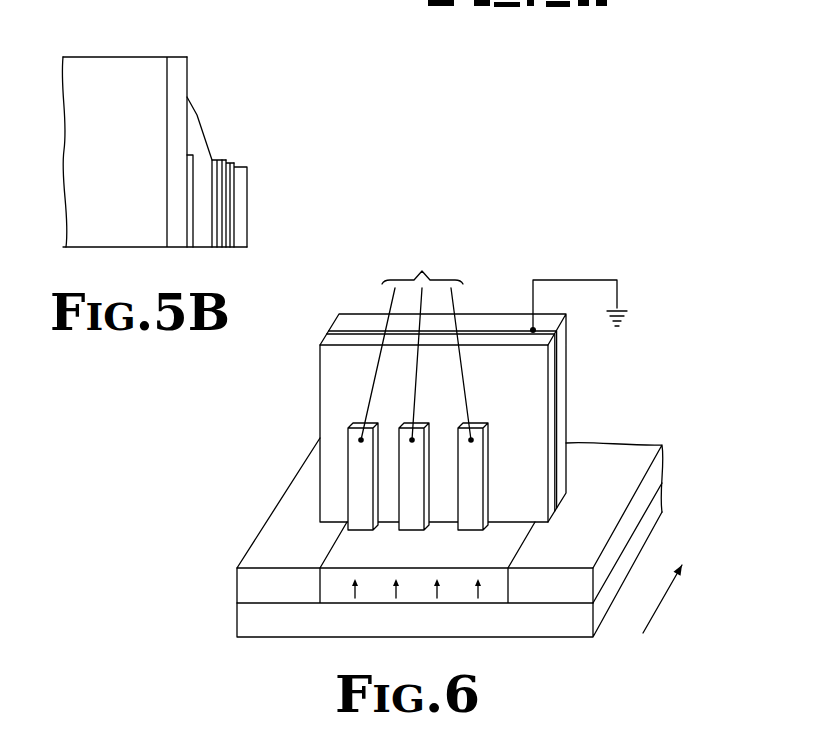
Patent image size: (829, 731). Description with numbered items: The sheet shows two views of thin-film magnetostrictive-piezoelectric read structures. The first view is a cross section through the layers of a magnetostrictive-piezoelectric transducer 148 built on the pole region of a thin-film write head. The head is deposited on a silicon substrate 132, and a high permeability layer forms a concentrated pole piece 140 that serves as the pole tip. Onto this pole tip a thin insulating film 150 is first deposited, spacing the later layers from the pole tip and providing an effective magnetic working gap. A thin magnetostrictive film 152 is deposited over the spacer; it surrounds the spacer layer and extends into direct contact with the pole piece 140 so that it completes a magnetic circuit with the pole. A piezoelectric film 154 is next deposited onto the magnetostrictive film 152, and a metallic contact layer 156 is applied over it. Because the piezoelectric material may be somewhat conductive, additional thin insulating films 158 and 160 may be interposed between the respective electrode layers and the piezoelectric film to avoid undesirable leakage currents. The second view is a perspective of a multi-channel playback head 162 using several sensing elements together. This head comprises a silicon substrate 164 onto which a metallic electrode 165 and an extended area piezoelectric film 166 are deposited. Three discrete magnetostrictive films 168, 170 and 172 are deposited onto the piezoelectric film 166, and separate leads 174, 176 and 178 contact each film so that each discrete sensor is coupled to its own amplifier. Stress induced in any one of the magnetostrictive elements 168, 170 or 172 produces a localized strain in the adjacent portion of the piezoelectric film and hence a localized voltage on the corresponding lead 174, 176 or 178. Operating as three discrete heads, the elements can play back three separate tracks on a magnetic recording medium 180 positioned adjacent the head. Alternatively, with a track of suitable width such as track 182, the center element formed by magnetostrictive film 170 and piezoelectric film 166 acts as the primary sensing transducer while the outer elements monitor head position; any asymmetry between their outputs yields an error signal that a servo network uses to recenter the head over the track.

In FIG. 5B, the silicon substrate 132 is at (110, 65).
In FIG. 5B, the concentrated pole piece 140 is at (183, 60).
In FIG. 5B, the magnetostrictive-piezoelectric transducer 148 is at (231, 174).
In FIG. 5B, the insulating film 150 is at (190, 238).
In FIG. 5B, the magnetostrictive film 152 is at (197, 107).
In FIG. 5B, the piezoelectric film 154 is at (223, 161).
In FIG. 5B, the metallic contact layer 156 is at (242, 202).
In FIG. 5B, the insulating film 158 is at (212, 157).
In FIG. 5B, the insulating film 160 is at (232, 163).
In FIG. 6, the head 162 is at (465, 388).
In FIG. 6, the silicon substrate 164 is at (567, 352).
In FIG. 6, the metallic electrode 165 is at (556, 417).
In FIG. 6, the piezoelectric film 166 is at (532, 498).
In FIG. 6, the magnetostrictive film 168 is at (313, 525).
In FIG. 6, the magnetostrictive film 170 is at (418, 522).
In FIG. 6, the magnetostrictive film 172 is at (483, 456).
In FIG. 6, the lead 174 is at (367, 292).
In FIG. 6, the lead 176 is at (417, 358).
In FIG. 6, the lead 178 is at (456, 304).
In FIG. 6, the magnetic recording medium 180 is at (481, 543).
In FIG. 6, the track 182 is at (367, 606).